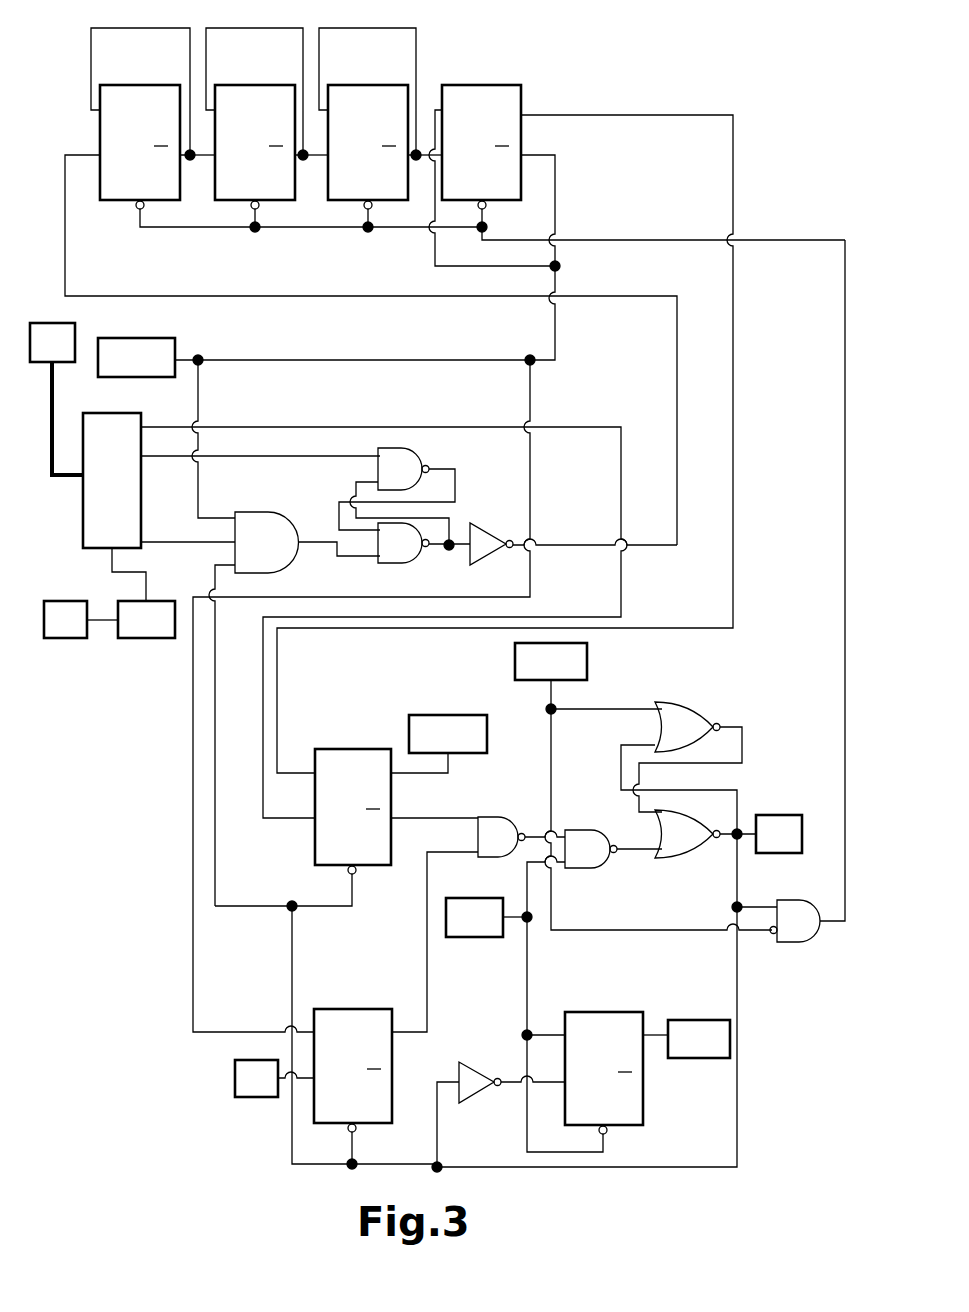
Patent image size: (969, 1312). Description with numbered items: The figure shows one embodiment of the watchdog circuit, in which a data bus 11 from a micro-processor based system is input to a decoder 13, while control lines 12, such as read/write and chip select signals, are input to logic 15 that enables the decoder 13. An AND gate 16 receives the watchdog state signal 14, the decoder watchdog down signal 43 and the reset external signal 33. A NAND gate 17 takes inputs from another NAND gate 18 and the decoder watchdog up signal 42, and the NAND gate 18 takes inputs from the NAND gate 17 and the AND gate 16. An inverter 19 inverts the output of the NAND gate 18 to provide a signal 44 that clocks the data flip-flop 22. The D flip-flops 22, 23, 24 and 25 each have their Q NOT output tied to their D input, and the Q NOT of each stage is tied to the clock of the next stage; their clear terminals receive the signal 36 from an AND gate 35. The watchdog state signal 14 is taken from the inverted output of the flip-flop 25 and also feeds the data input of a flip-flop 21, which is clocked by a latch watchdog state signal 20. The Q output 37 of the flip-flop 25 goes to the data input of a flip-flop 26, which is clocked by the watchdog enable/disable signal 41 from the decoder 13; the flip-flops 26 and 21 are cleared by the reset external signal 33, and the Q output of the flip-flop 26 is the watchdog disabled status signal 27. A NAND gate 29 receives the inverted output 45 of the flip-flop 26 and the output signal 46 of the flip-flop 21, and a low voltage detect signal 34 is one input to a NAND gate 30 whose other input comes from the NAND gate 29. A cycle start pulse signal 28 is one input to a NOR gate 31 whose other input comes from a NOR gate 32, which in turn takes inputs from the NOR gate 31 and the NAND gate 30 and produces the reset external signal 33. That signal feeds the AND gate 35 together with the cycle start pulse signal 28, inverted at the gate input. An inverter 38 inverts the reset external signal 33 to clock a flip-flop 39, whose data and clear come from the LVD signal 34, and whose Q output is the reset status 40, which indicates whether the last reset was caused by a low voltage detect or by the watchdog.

The data bus 11 is at (53, 323).
The control lines 12 is at (70, 638).
The decoder 13 is at (83, 425).
The watchdog state signal 14 is at (163, 377).
The logic 15 is at (146, 638).
The AND gate 16 is at (294, 709).
The NAND gate 17 is at (397, 496).
The NAND gate 18 is at (424, 543).
The inverter 19 is at (498, 560).
The latch watchdog state signal 20 is at (265, 1097).
The flip-flop 21 is at (375, 1009).
The data flip-flop 22 is at (150, 84).
The D flip-flop 23 is at (265, 84).
The D flip-flop 24 is at (383, 84).
The D flip-flop 25 is at (488, 84).
The flip-flop 26 is at (370, 749).
The watchdog disabled status signal 27 is at (446, 715).
The cycle start pulse signal 28 is at (588, 648).
The NAND gate 29 is at (521, 837).
The NAND gate 30 is at (594, 991).
The NOR gate 31 is at (700, 692).
The NOR gate 32 is at (692, 858).
The reset external signal 33 is at (770, 815).
The low voltage detect signal 34 is at (485, 937).
The AND gate 35 is at (795, 921).
The signal 36 is at (845, 590).
The output Q of flip-flop 37 is at (584, 115).
The inverter 38 is at (483, 1093).
The flip-flop 39 is at (622, 1012).
The reset status 40 is at (716, 1020).
The watchdog enable/disable signal 41 is at (290, 427).
The decoder watchdog up signal 42 is at (305, 456).
The decoder watchdog down signal 43 is at (177, 542).
The signal 44 is at (88, 153).
The inverted output of flip-flop 45 is at (410, 818).
The output signal of flip-flop 46 is at (427, 880).